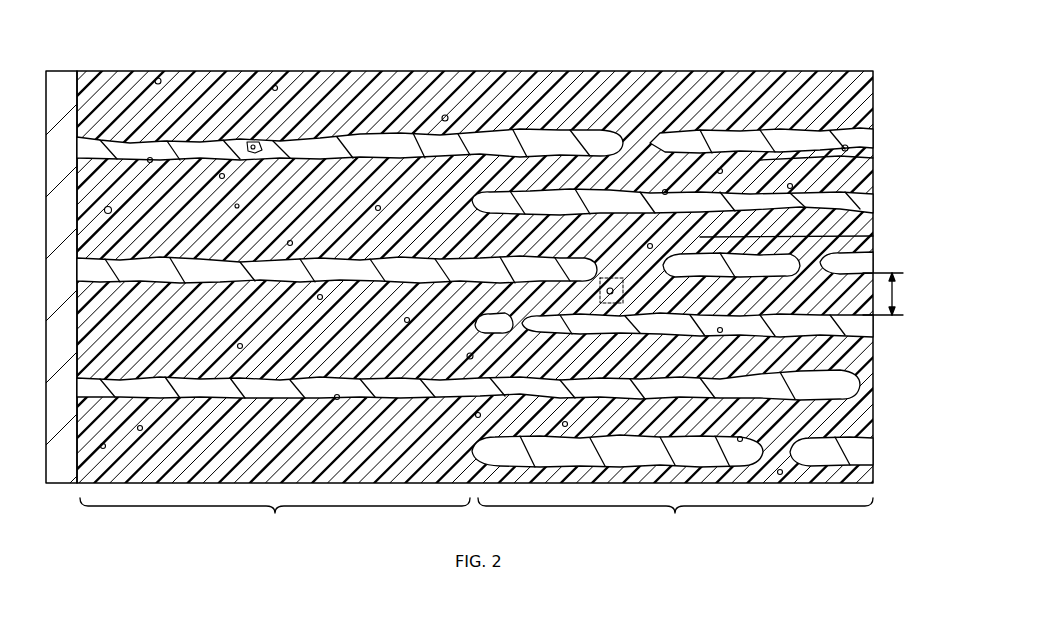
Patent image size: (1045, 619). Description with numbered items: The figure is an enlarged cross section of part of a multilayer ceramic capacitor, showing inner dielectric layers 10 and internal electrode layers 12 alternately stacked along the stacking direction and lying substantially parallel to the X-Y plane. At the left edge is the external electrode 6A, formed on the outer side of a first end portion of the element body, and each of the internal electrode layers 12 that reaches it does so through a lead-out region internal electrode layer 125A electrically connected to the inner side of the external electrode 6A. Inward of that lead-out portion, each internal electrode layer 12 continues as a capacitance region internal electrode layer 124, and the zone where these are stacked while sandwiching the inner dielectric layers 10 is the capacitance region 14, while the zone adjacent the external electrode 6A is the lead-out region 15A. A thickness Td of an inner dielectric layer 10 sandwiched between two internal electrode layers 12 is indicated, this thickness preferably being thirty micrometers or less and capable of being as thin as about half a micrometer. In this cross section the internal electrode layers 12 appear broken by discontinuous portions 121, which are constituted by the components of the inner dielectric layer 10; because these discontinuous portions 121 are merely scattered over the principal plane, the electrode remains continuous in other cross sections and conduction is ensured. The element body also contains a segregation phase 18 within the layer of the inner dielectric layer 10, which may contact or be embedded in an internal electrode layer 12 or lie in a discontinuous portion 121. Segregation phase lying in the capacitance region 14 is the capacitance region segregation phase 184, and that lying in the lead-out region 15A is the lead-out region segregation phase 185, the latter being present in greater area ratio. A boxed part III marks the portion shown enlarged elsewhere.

The external electrode 6A is at (63, 88).
The lead-out region segregation phase 185 is at (157, 76).
The lead-out region internal electrode layer 125A is at (372, 150).
The capacitance region internal electrode layer 124 is at (588, 143).
The discontinuous portion 121 is at (642, 140).
The internal electrode layer 12 is at (732, 135).
The capacitance region segregation phase 184 is at (873, 160).
The inner dielectric layer 10 is at (855, 178).
The segregation phase 18 is at (873, 236).
The thickness of the inner dielectric layer Td is at (889, 294).
The part III is at (623, 290).
The lead-out region 15A is at (275, 517).
The capacitance region 14 is at (675, 517).